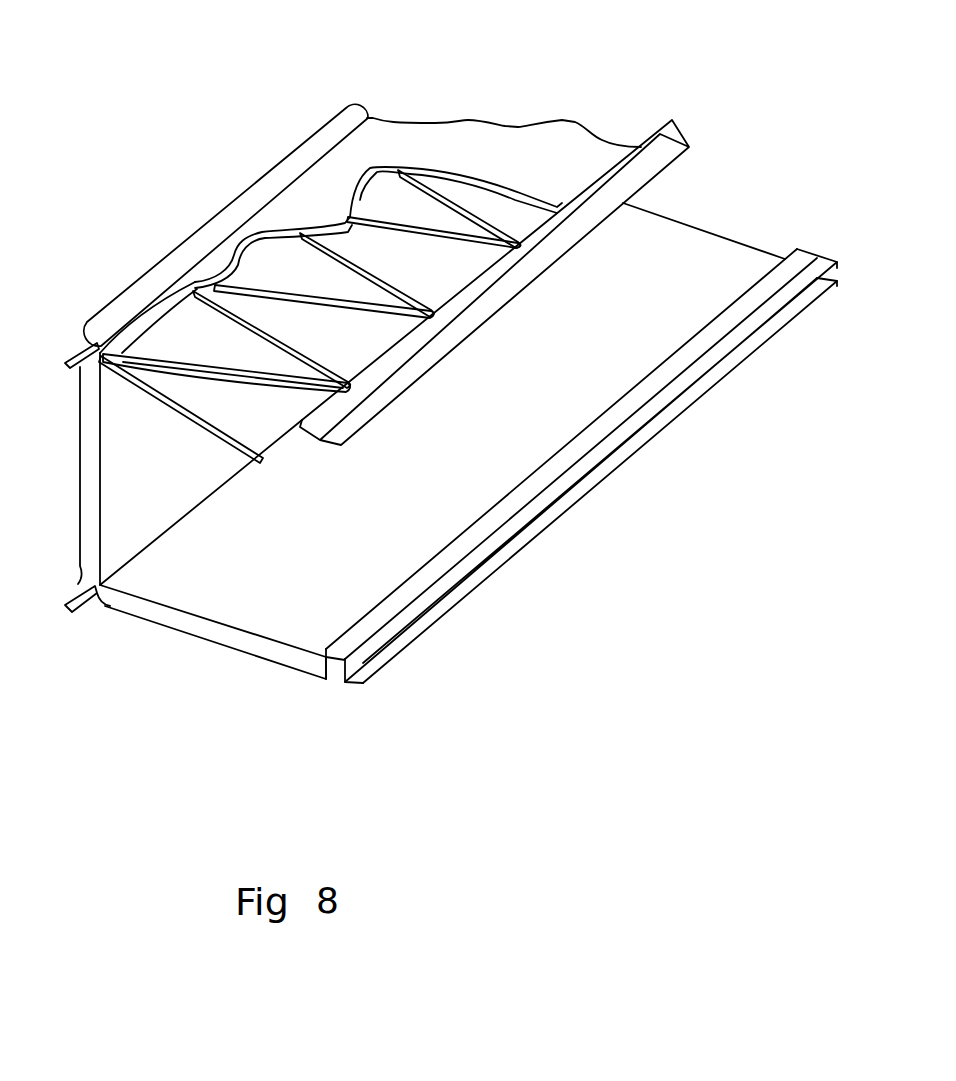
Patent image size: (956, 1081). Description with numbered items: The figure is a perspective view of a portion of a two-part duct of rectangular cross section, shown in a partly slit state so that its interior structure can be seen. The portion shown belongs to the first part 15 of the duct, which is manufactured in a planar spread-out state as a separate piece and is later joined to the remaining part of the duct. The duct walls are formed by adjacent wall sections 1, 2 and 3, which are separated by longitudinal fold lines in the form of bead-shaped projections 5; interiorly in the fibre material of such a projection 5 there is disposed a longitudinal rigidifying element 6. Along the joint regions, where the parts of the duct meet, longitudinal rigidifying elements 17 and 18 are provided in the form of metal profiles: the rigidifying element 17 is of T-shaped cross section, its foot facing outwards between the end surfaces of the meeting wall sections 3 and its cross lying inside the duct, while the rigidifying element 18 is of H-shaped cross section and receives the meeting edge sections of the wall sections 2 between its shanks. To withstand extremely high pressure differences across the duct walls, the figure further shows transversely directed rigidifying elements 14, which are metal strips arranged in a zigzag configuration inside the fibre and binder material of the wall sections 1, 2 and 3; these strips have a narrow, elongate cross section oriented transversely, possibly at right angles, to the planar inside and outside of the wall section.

The wall section 1 is at (117, 495).
The wall section 2 is at (293, 620).
The wall section 3 is at (478, 145).
The bead-shaped projection 5 is at (245, 203).
The longitudinal rigidifying element 6 is at (76, 613).
The transverse rigidifying element 14 is at (463, 240).
The first part 15 is at (127, 771).
The longitudinal rigidifying element 17 is at (662, 128).
The longitudinal rigidifying element 18 is at (430, 620).